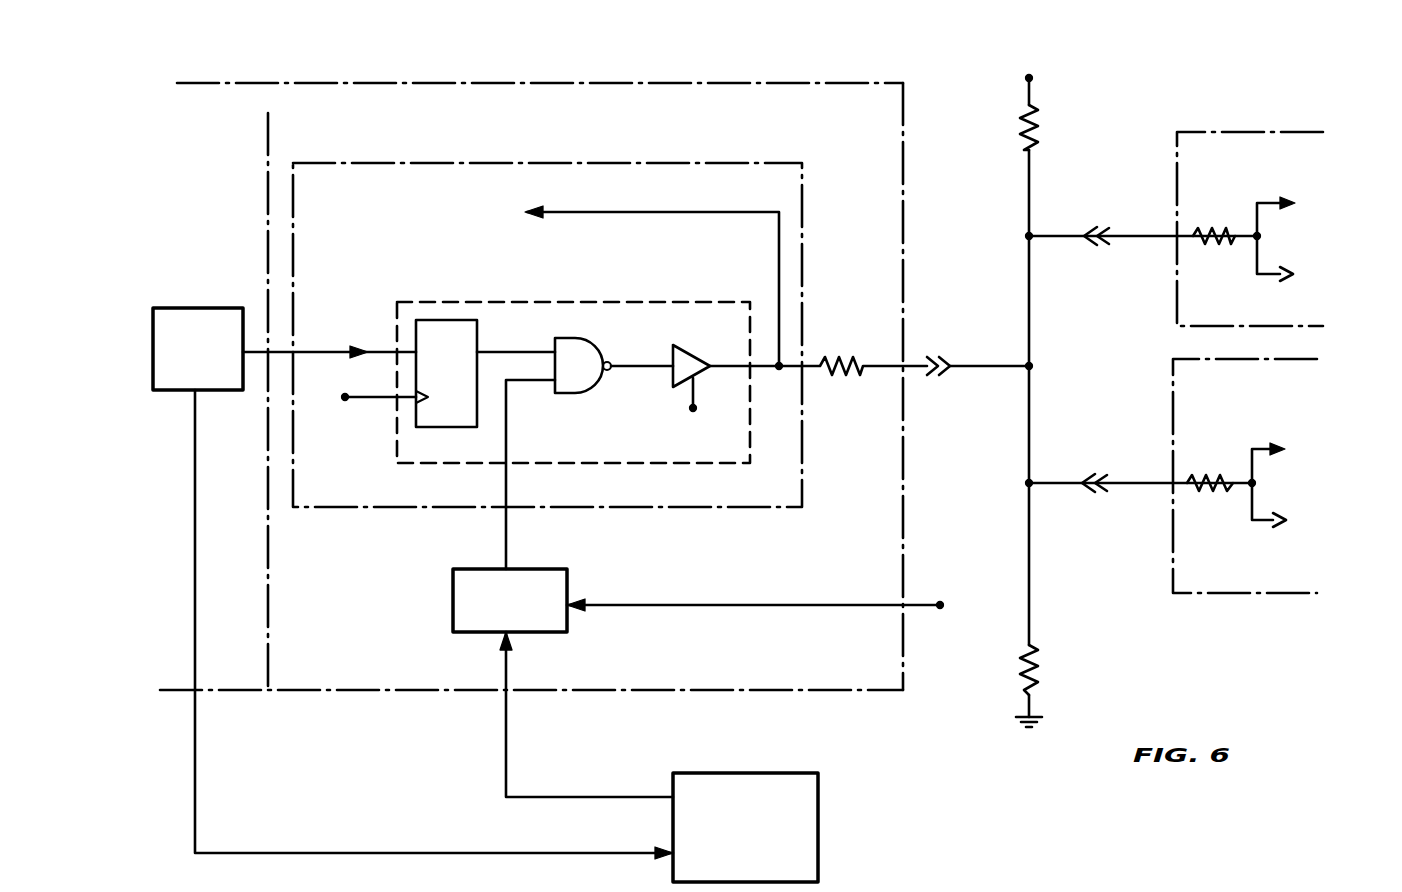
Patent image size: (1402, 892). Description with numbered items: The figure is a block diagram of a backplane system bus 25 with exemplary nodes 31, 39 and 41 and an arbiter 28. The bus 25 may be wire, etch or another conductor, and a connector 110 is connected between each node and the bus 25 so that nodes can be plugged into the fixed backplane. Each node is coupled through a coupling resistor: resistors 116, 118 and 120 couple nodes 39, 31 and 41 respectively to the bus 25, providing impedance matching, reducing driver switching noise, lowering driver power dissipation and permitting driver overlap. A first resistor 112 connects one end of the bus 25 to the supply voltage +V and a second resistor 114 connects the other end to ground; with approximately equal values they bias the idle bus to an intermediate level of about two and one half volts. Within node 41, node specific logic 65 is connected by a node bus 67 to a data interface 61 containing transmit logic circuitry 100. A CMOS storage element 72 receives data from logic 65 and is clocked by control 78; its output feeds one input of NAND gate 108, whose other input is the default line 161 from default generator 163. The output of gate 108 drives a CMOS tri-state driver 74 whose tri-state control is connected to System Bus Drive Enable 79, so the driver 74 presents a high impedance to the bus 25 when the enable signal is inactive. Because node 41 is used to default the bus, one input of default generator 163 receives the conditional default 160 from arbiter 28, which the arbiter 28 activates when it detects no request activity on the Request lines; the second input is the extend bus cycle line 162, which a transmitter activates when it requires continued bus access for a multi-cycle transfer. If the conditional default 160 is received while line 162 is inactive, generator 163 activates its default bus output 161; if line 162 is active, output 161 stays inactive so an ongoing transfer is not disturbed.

The node 41 is at (601, 82).
The data interface 61 is at (635, 162).
The node specific logic 65 is at (192, 306).
The node bus 67 is at (323, 348).
The storage element 72 is at (474, 322).
The control 78 is at (360, 422).
The transmit logic circuitry 100 is at (697, 302).
The NAND gate 108 is at (582, 352).
The default line 161 is at (530, 395).
The driver 74 is at (688, 350).
The System Bus Drive Enable 79 is at (678, 418).
The coupling resistor 120 is at (836, 366).
The connector 110 is at (948, 360).
The system bus 25 is at (1030, 567).
The first resistor 112 is at (1031, 118).
The second resistor 114 is at (1035, 665).
The node 39 is at (1277, 120).
The coupling resistor 116 is at (1213, 232).
The node 31 is at (1240, 595).
The coupling resistor 118 is at (1218, 483).
The default generator 163 is at (570, 570).
The extend bus cycle line 162 is at (790, 605).
The conditional default 160 is at (506, 718).
The arbiter 28 is at (823, 778).